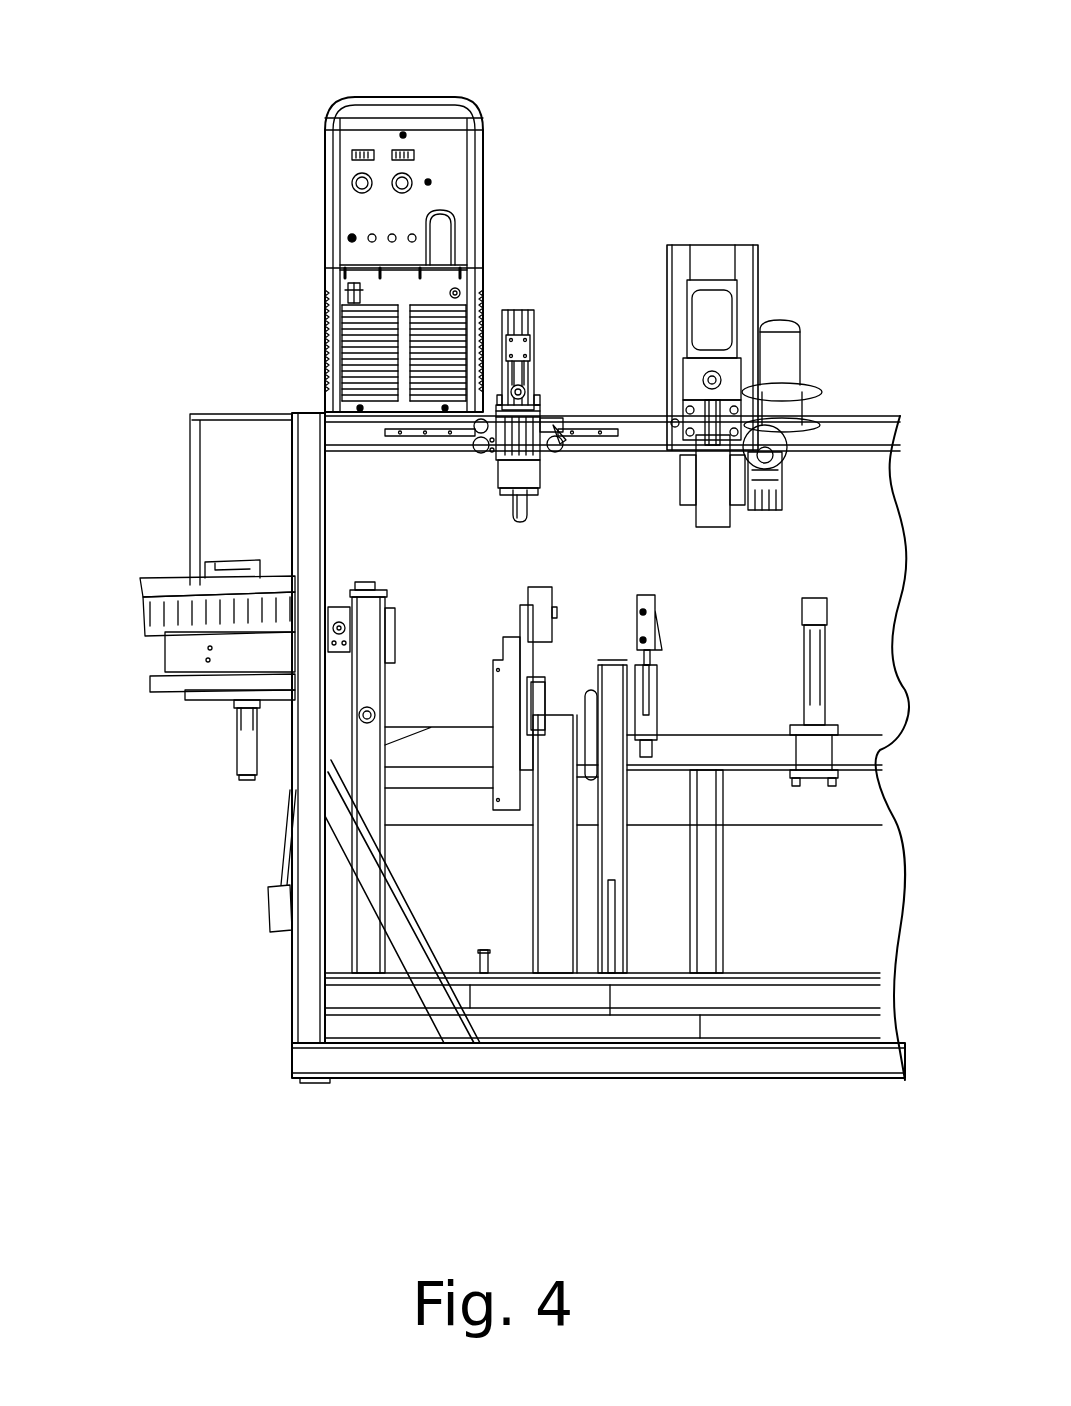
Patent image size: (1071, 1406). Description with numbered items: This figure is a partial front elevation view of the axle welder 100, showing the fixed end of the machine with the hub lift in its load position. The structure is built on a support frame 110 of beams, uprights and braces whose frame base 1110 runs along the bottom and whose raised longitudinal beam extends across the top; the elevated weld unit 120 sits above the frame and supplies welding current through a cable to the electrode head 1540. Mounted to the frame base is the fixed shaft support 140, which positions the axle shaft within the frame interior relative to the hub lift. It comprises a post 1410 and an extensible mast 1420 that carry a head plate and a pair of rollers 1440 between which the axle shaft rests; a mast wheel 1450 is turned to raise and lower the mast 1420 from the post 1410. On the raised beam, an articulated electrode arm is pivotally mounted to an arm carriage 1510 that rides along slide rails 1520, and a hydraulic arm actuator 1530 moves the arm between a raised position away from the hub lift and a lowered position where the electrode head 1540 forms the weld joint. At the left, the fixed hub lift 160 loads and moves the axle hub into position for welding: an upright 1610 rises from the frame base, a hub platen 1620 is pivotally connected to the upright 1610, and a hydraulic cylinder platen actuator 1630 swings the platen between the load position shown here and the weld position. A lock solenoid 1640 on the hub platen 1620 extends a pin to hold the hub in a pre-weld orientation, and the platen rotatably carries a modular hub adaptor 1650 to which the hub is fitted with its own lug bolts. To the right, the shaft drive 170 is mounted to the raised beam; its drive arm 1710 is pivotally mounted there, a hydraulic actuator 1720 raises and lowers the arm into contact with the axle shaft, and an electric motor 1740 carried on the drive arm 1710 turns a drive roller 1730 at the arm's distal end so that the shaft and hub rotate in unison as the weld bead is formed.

The axle welder 100 is at (778, 86).
The support frame 110 is at (352, 1083).
The weld unit 120 is at (328, 183).
The shaft support assembly 140 is at (557, 393).
The hub lift 160 is at (151, 652).
The shaft drive sub-assembly 170 is at (767, 292).
The frame base 1110 is at (660, 1068).
The post 1410 is at (545, 925).
The extensible mast 1420 is at (515, 668).
The roller 1440 is at (532, 600).
The mast wheel 1450 is at (586, 690).
The arm carriage 1510 is at (490, 455).
The slide rail 1520 is at (410, 438).
The hydraulic arm actuator 1530 is at (517, 370).
The electrode head 1540 is at (532, 500).
The upright 1610 is at (372, 790).
The hub platen 1620 is at (188, 690).
The hydraulic cylinder platen actuator 1630 is at (281, 858).
The lock solenoid 1640 is at (237, 757).
The hub adaptor 1650 is at (171, 634).
The drive arm 1710 is at (690, 430).
The hydraulic actuator 1720 is at (712, 308).
The drive roller 1730 is at (714, 510).
The electric motor 1740 is at (797, 352).